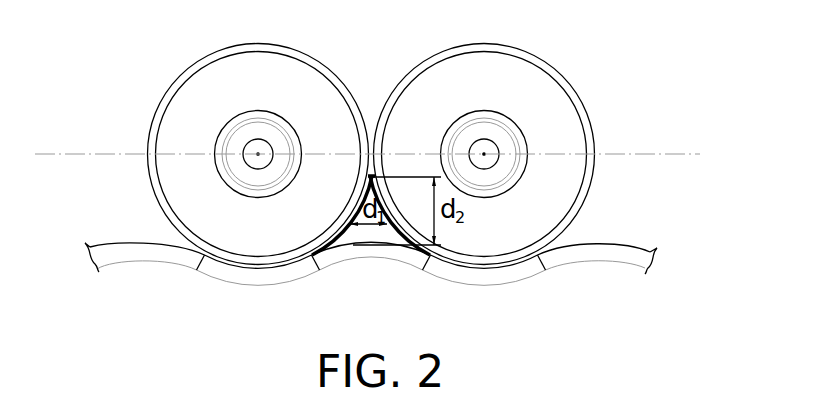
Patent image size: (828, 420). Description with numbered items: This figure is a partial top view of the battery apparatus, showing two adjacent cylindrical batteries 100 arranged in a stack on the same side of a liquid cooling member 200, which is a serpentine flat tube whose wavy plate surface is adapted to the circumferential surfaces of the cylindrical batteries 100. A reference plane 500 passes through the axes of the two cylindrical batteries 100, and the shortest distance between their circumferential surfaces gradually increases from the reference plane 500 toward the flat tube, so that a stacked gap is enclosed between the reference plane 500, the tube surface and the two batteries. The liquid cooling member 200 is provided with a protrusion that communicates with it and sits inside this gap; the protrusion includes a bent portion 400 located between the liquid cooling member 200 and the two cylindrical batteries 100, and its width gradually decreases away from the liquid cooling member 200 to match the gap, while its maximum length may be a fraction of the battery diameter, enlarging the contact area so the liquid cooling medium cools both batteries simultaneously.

The cylindrical battery 100 is at (258, 80).
The liquid cooling member 200 is at (130, 253).
The bent portion 400 is at (350, 237).
The reference plane 500 is at (650, 145).